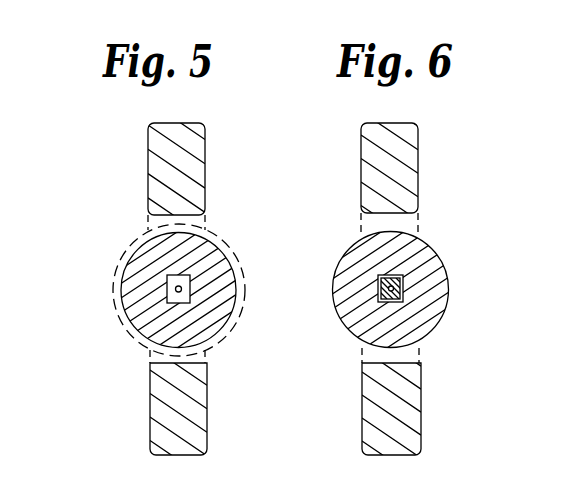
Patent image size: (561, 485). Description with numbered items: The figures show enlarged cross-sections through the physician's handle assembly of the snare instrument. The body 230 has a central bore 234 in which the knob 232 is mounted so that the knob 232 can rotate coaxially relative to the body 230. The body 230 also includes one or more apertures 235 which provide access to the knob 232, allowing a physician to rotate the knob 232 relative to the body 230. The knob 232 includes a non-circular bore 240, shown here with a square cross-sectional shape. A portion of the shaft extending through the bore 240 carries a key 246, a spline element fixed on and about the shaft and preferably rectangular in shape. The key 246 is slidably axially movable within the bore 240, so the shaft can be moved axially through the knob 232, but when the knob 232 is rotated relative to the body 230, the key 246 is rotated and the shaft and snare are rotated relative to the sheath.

In FIG. 5, the body 230 is at (190, 160).
In FIG. 6, the body 230 is at (412, 152).
In FIG. 5, the knob 232 is at (130, 263).
In FIG. 6, the knob 232 is at (351, 263).
In FIG. 5, the central bore 234 is at (148, 212).
In FIG. 6, the central bore 234 is at (400, 216).
In FIG. 5, the apertures 235 is at (205, 212).
In FIG. 6, the apertures 235 is at (361, 213).
In FIG. 5, the non-circular bore 240 is at (167, 292).
In FIG. 6, the key 246 is at (405, 292).